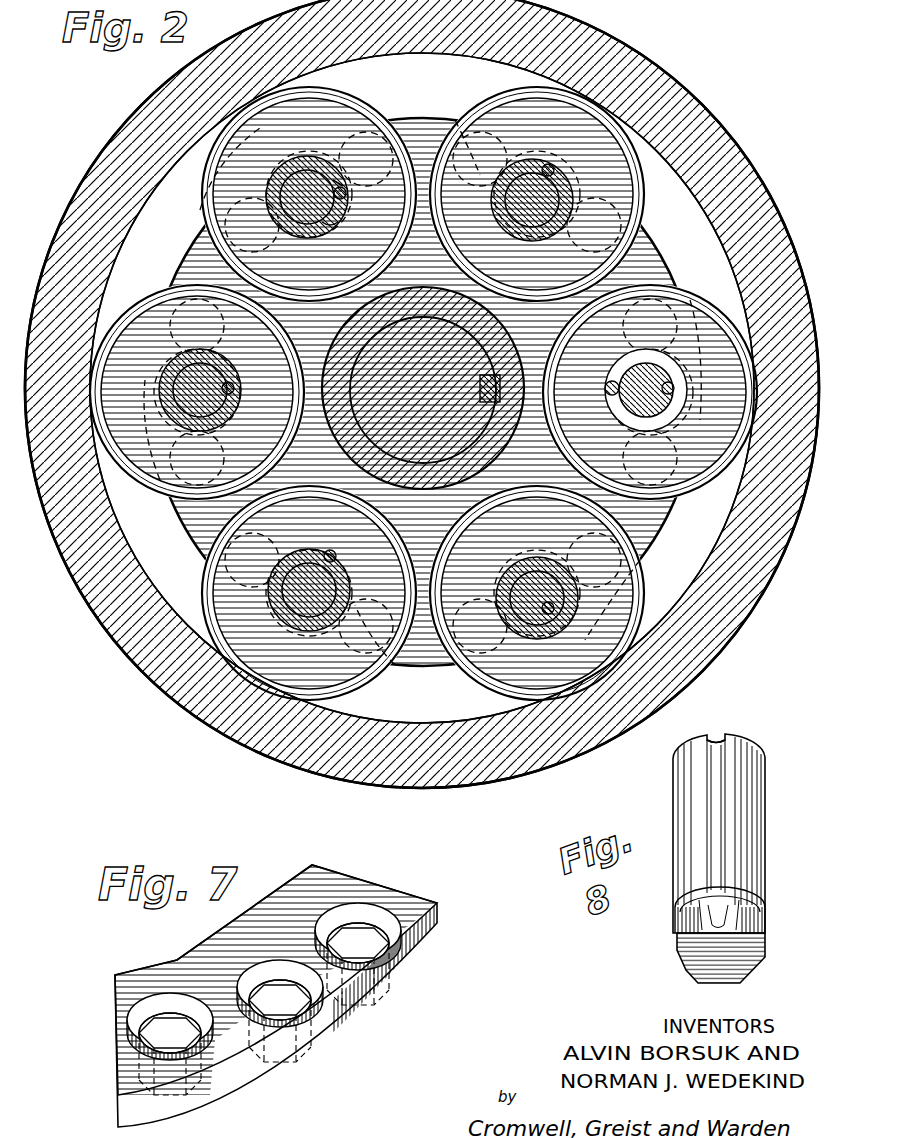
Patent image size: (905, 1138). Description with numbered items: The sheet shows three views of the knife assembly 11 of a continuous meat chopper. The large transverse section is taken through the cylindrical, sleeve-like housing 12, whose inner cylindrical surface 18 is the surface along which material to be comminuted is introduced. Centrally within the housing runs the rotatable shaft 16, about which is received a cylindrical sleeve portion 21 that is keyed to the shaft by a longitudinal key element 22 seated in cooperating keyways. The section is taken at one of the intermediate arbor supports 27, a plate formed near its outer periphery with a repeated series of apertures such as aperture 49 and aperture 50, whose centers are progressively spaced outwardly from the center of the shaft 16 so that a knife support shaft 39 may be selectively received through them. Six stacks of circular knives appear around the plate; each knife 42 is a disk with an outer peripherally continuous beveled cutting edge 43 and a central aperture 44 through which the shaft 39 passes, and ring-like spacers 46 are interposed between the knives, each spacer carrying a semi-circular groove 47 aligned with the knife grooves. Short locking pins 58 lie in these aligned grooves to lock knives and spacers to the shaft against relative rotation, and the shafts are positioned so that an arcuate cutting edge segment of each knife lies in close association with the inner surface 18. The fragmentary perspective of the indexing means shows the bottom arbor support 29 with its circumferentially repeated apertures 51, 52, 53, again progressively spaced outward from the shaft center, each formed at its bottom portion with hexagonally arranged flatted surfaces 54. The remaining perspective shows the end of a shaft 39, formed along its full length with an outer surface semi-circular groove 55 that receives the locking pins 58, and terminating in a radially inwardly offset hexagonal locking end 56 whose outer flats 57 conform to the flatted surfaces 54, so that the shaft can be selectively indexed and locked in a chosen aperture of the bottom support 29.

In FIG. 2, the knife assembly 11 is at (148, 542).
In FIG. 2, the housing 12 is at (698, 102).
In FIG. 2, the shaft 16 is at (368, 358).
In FIG. 2, the inner cylindrical surface 18 is at (706, 172).
In FIG. 2, the sleeve portion 21 is at (350, 448).
In FIG. 2, the key element 22 is at (500, 380).
In FIG. 2, the intermediate arbor support 27 is at (655, 248).
In FIG. 7, the bottom arbor support 29 is at (268, 1078).
In FIG. 2, the shaft 39 is at (300, 158).
In FIG. 8, the shaft 39 is at (758, 766).
In FIG. 2, the knife 42 is at (343, 102).
In FIG. 2, the beveled cutting edge 43 is at (372, 108).
In FIG. 2, the central aperture 44 is at (672, 388).
In FIG. 2, the spacer 46 is at (292, 238).
In FIG. 2, the groove 47 is at (338, 180).
In FIG. 2, the aperture 49 is at (210, 218).
In FIG. 2, the aperture 50 is at (385, 115).
In FIG. 7, the aperture 51 is at (196, 1002).
In FIG. 7, the aperture 52 is at (290, 965).
In FIG. 7, the aperture 53 is at (355, 900).
In FIG. 7, the flatted surfaces 54 is at (250, 990).
In FIG. 2, the semi-circular groove 55 is at (331, 226).
In FIG. 8, the semi-circular groove 55 is at (716, 758).
In FIG. 8, the hexagonal locking end 56 is at (745, 968).
In FIG. 8, the flats 57 is at (685, 930).
In FIG. 2, the locking pin 58 is at (348, 196).